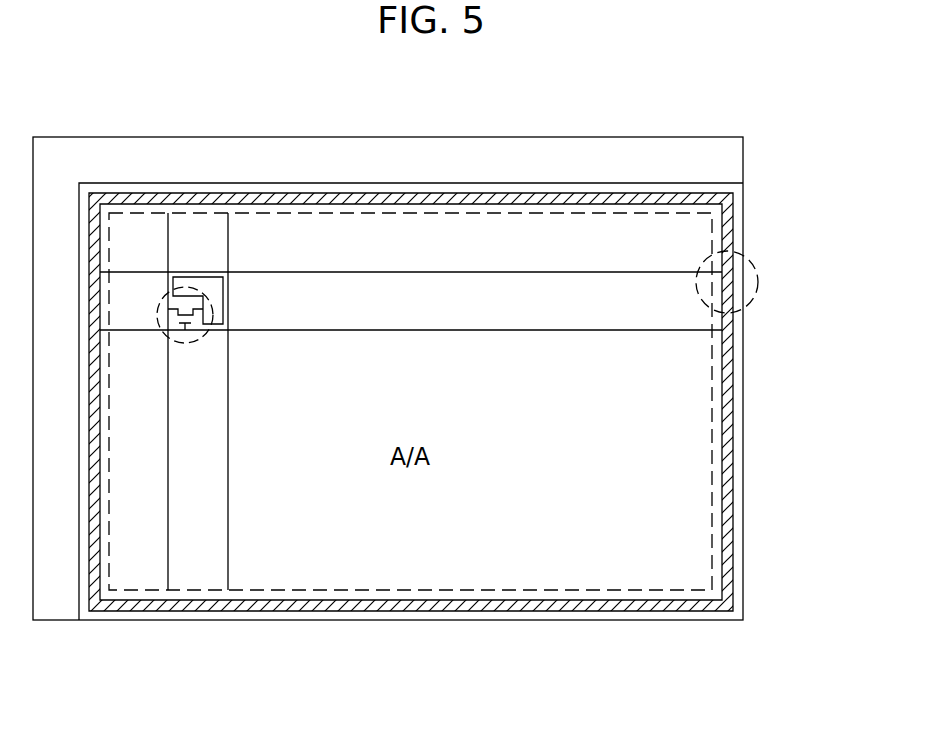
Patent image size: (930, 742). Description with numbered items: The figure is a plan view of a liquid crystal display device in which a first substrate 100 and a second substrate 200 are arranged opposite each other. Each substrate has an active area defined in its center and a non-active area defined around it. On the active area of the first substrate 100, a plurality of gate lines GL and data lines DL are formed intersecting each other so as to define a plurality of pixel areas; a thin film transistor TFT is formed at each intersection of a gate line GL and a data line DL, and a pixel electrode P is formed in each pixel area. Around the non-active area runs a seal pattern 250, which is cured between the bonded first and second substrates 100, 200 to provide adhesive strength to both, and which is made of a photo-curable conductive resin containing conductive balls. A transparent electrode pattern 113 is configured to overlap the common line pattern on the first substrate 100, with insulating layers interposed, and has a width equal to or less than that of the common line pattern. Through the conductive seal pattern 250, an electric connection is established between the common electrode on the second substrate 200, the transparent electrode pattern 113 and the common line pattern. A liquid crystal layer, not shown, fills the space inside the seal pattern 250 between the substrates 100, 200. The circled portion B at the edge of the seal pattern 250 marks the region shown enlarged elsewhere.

The first substrate 100 is at (653, 137).
The second substrate 200 is at (723, 179).
The seal pattern 250 is at (732, 393).
The transparent electrode pattern 113 is at (723, 250).
The portion B is at (758, 278).
The gate line GL is at (411, 317).
The data line DL is at (175, 401).
The pixel electrode P is at (220, 295).
The thin film transistor TFT is at (188, 338).